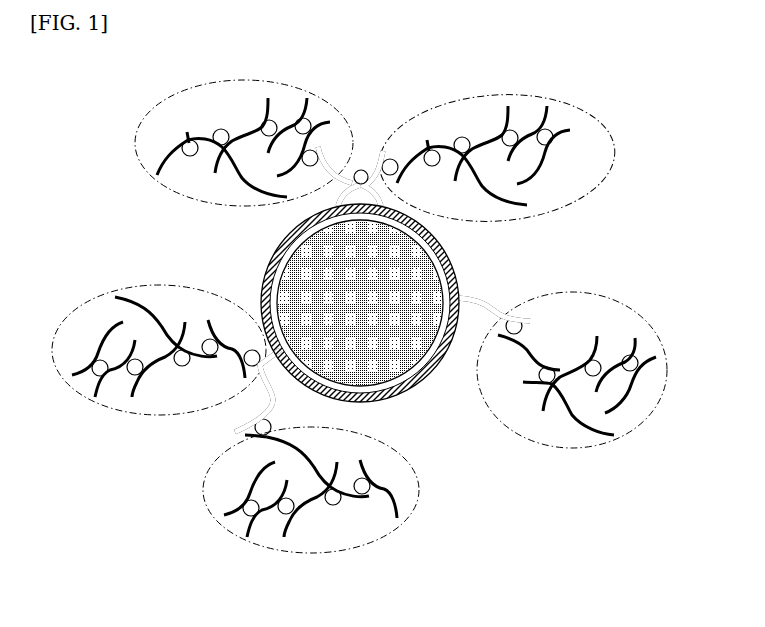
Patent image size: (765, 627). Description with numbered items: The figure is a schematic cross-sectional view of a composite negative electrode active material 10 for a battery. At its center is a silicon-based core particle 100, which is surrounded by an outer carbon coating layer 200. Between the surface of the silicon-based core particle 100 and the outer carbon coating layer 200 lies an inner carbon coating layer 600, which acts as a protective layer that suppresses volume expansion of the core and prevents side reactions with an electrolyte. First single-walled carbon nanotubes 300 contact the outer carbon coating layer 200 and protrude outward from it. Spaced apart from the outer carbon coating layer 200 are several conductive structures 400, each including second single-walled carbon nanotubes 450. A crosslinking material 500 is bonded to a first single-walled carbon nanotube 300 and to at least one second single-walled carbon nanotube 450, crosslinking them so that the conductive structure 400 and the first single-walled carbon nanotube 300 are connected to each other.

The composite negative electrode active material 10 is at (78, 101).
The silicon-based core particle 100 is at (377, 353).
The outer carbon coating layer 200 is at (278, 247).
The first single-walled carbon nanotube 300 is at (480, 298).
The conductive structure 400 is at (617, 160).
The second single-walled carbon nanotube 450 is at (550, 115).
The crosslinking material 500 is at (517, 318).
The inner carbon coating layer 600 is at (268, 267).